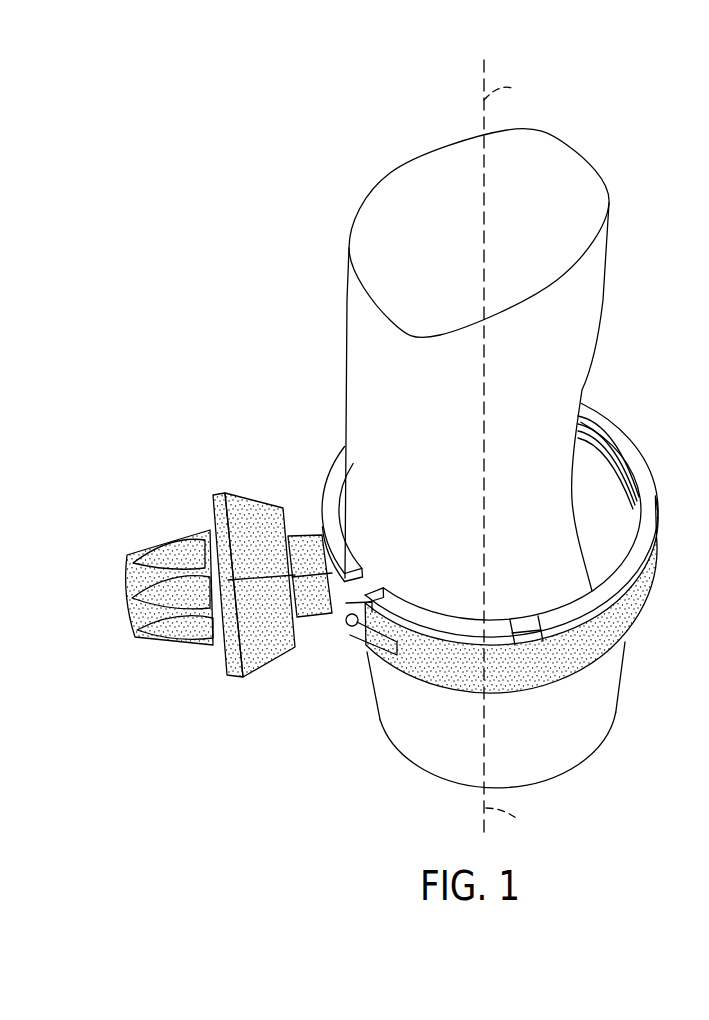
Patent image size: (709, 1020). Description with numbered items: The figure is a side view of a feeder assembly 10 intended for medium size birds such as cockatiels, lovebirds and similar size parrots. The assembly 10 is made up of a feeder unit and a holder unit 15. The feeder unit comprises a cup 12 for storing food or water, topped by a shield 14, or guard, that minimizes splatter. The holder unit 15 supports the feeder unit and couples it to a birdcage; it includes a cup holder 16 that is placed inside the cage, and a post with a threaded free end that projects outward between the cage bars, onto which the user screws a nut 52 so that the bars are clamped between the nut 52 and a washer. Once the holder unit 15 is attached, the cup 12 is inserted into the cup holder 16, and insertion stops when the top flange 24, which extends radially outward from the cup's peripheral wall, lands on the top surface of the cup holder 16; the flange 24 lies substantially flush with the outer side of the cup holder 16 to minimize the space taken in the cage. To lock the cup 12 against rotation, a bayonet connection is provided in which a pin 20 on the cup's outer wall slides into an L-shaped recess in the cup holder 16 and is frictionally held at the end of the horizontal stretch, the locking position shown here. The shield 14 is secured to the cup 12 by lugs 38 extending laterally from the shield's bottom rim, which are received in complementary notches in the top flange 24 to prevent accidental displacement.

The feeder assembly 10 is at (410, 447).
The cup 12 is at (613, 675).
The shield 14 is at (583, 353).
The holder unit 15 is at (229, 544).
The cup holder 16 is at (640, 582).
The pin 20 is at (352, 627).
The top flange 24 is at (432, 622).
The lugs 38 is at (527, 640).
The nut 52 is at (180, 570).